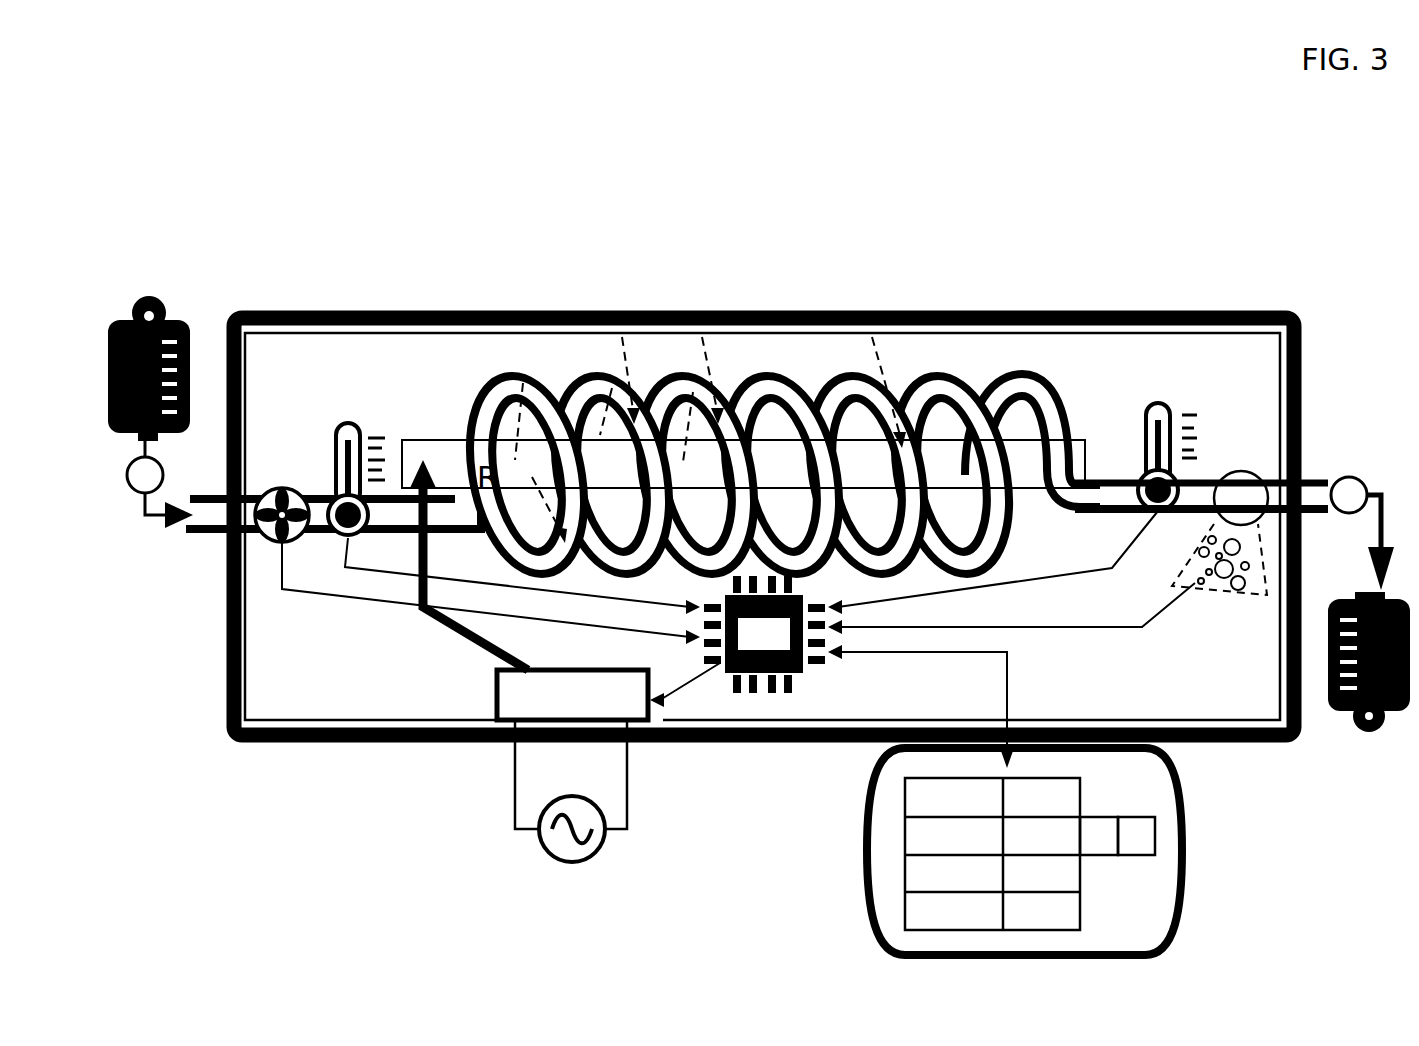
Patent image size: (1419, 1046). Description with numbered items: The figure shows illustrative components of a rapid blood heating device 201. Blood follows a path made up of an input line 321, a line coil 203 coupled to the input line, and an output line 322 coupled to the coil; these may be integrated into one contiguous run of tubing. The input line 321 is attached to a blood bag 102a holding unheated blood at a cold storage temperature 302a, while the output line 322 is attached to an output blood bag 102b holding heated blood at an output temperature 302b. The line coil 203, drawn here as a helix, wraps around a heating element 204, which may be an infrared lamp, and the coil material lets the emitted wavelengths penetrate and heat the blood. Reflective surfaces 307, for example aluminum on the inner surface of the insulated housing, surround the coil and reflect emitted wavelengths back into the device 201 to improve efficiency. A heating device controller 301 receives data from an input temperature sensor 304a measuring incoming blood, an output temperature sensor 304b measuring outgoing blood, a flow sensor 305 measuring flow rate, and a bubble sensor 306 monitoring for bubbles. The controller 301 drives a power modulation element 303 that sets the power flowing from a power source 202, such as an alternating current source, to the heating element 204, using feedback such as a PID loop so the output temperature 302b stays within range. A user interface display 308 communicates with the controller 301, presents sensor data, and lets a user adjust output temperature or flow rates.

The blood bag 102a is at (133, 317).
The output blood bag 102b is at (1367, 733).
The rapid blood heating device 201 is at (302, 310).
The power source 202 is at (573, 862).
The line coil 203 is at (502, 390).
The heating element 204 is at (1035, 478).
The heating device controller 301 is at (797, 673).
The cold storage temperature 302a is at (112, 520).
The output temperature 302b is at (1355, 429).
The power modulation element 303 is at (497, 695).
The input temperature sensor 304a is at (350, 423).
The output temperature sensor 304b is at (1160, 402).
The flow sensor 305 is at (280, 487).
The bubble sensor 306 is at (1255, 467).
The reflective surfaces 307 is at (427, 335).
The user interface display 308 is at (1182, 837).
The input line 321 is at (208, 513).
The output line 322 is at (1313, 511).